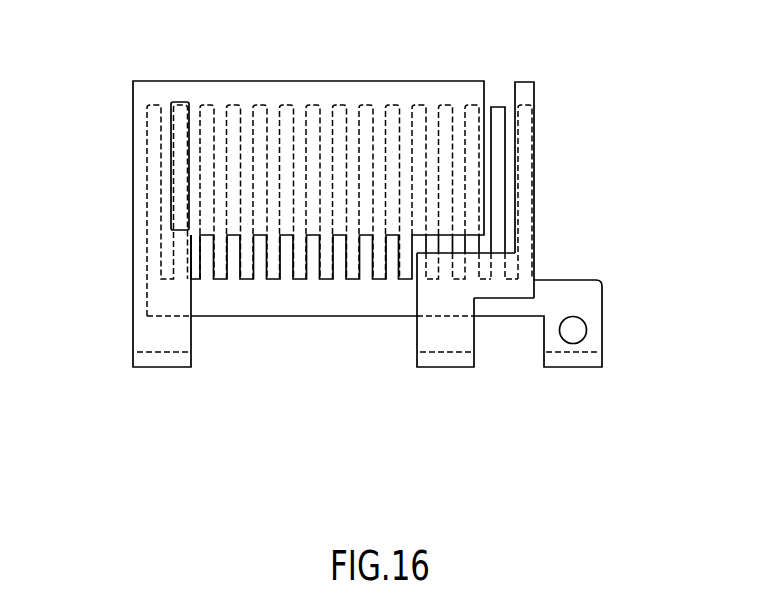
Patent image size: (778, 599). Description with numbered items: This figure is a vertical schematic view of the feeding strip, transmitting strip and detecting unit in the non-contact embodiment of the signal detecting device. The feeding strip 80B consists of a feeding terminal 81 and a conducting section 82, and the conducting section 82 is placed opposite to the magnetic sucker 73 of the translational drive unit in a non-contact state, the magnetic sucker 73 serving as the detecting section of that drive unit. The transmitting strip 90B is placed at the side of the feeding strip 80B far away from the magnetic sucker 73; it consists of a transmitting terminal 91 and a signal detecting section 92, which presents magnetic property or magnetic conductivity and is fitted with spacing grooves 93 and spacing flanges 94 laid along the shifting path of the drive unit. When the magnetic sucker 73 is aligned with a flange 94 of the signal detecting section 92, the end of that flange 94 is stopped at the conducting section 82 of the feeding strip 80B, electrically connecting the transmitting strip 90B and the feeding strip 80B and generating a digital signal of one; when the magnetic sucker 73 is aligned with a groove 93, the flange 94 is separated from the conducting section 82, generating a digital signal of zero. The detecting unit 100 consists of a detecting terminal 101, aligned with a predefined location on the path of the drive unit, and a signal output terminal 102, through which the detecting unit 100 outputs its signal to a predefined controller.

The feeding strip 80B is at (252, 224).
The conducting section 82 is at (386, 92).
The feeding terminal 81 is at (170, 367).
The magnetic sucker 73 is at (183, 102).
The transmitting strip 90B is at (439, 235).
The signal detecting section 92 is at (256, 316).
The spacing groove 93 is at (488, 105).
The spacing flange 94 is at (503, 105).
The detecting terminal 101 is at (535, 93).
The signal output terminal 102 is at (440, 367).
The detecting unit 100 is at (490, 309).
The transmitting terminal 91 is at (577, 367).